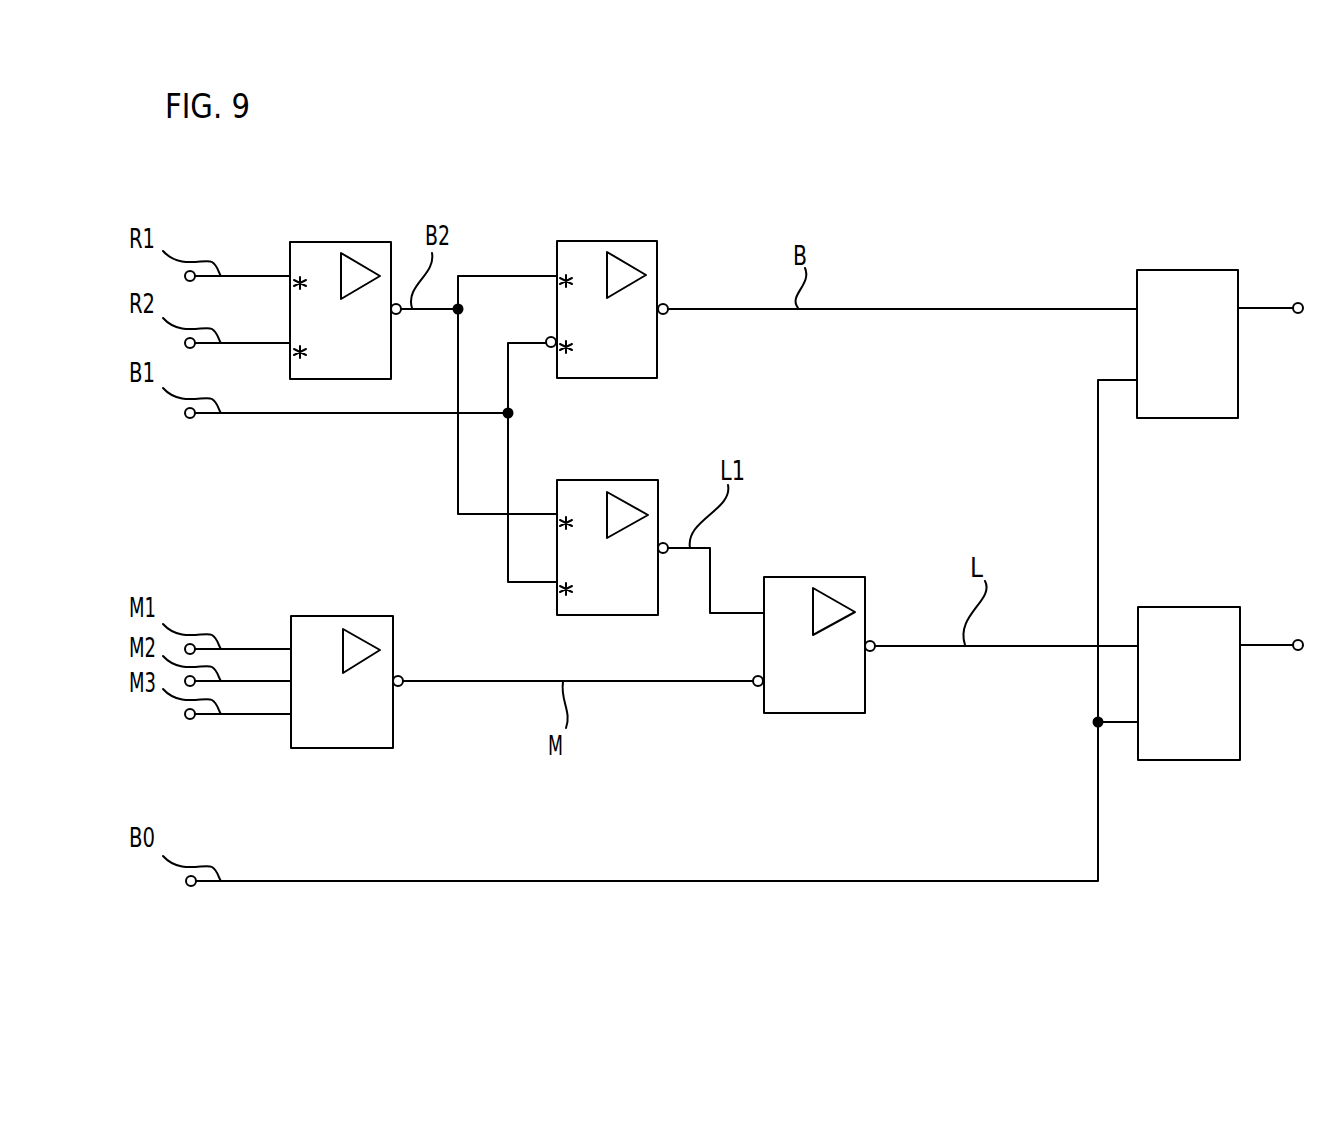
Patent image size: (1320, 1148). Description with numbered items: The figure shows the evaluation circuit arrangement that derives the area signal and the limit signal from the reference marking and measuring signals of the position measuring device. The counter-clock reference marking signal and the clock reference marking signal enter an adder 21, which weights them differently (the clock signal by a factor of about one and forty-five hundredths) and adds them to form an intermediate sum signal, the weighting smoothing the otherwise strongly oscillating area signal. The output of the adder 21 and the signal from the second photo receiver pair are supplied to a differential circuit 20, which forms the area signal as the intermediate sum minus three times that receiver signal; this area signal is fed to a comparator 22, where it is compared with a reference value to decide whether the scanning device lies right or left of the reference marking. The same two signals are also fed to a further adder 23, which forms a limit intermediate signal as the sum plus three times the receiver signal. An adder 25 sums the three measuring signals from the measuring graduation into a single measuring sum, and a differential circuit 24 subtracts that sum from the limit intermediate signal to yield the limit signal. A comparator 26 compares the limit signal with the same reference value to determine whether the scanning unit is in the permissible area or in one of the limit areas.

The differential circuit 20 is at (603, 241).
The adder 21 is at (338, 242).
The comparator 22 is at (1183, 270).
The further adder 23 is at (593, 480).
The differential circuit 24 is at (812, 577).
The adder 25 is at (337, 616).
The comparator 26 is at (1188, 607).